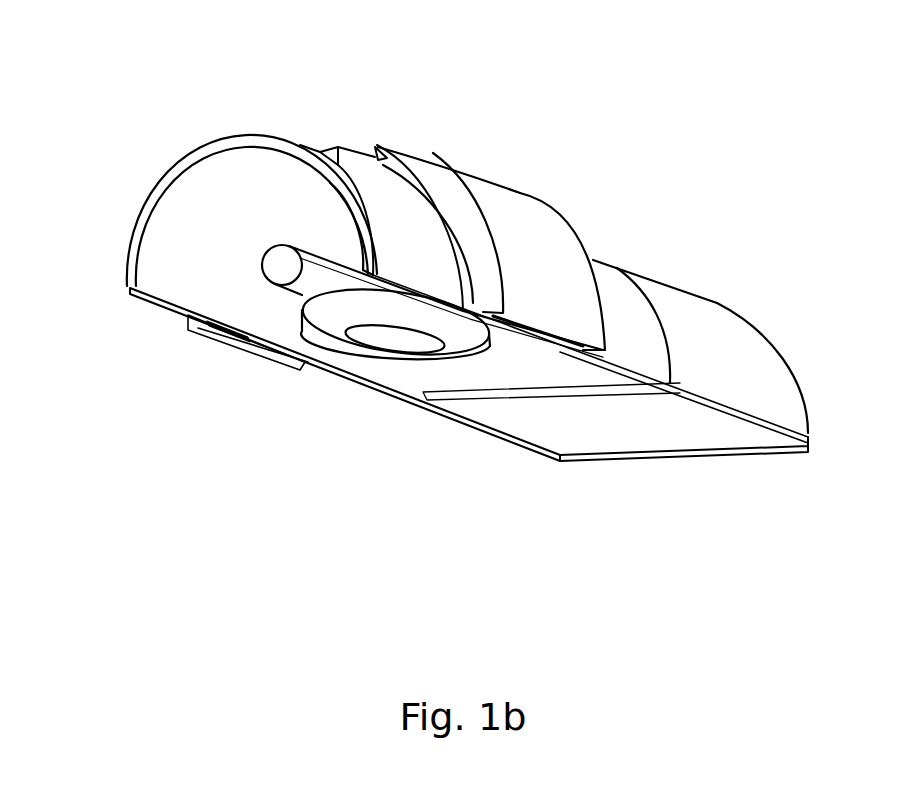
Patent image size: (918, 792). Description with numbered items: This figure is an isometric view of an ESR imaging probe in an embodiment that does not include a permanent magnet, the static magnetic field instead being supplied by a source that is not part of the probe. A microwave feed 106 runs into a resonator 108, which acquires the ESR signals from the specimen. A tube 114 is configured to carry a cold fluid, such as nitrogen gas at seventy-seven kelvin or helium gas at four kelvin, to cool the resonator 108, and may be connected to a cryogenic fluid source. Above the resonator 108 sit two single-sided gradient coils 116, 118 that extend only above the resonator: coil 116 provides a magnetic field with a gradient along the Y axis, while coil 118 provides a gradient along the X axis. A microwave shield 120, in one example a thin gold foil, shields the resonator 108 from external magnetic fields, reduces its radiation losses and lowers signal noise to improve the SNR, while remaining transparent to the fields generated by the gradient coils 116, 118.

The microwave feed 106 is at (277, 263).
The resonator 108 is at (335, 308).
The tube 114 is at (713, 317).
The gradient coil 116 is at (390, 155).
The gradient coil 118 is at (468, 248).
The microwave shield 120 is at (413, 277).